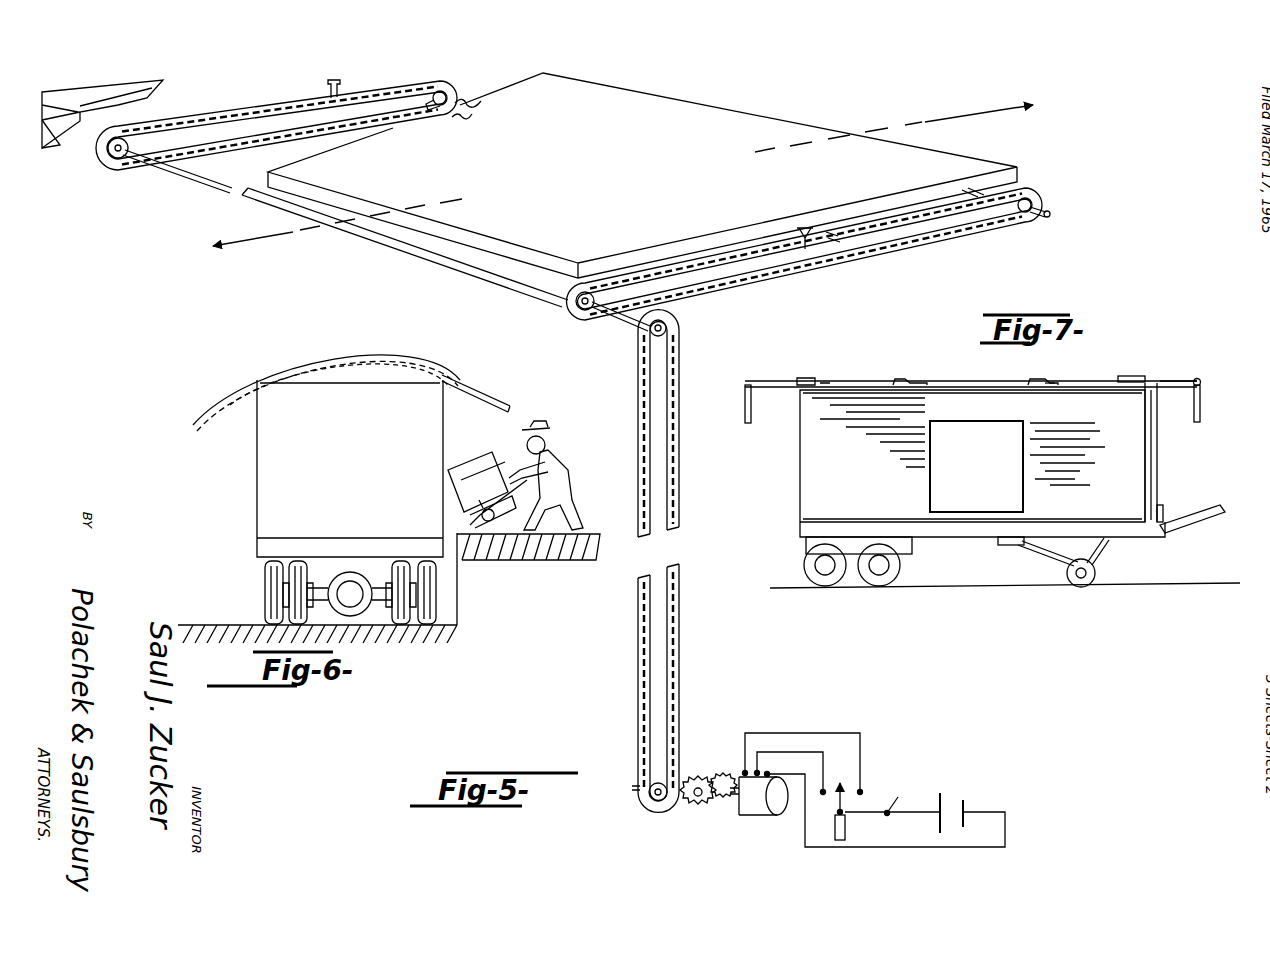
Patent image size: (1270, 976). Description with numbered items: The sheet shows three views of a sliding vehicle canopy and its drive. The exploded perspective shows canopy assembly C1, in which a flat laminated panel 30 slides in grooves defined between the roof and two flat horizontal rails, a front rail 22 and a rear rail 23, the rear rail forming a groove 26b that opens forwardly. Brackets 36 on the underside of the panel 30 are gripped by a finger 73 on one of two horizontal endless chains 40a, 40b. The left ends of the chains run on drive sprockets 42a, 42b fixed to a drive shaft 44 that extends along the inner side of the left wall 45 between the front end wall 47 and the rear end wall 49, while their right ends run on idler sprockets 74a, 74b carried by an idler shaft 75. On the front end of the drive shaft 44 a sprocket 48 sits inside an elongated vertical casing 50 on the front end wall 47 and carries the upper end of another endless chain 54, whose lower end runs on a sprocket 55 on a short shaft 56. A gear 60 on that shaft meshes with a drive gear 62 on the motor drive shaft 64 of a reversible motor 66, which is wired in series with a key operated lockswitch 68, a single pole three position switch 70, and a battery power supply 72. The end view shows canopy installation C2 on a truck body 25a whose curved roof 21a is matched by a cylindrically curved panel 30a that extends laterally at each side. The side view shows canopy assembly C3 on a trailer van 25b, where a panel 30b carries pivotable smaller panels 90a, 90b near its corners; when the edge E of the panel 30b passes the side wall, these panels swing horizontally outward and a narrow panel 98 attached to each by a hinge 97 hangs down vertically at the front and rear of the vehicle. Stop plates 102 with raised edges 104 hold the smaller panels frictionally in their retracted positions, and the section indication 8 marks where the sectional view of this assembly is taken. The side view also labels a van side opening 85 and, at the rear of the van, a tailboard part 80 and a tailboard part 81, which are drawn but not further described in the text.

In FIG. 6, the curved roof 21a is at (355, 358).
In FIG. 7, the front rail 22 is at (1140, 376).
In FIG. 5, the rear rail 23 is at (77, 92).
In FIG. 7, the rear rail 23 is at (803, 378).
In FIG. 6, the truck body 25a is at (256, 478).
In FIG. 7, the trailer van 25b is at (825, 485).
In FIG. 5, the groove 26b is at (43, 108).
In FIG. 5, the flat laminated panel 30 is at (518, 100).
In FIG. 6, the curved panel 30a is at (478, 404).
In FIG. 7, the panel 30b is at (990, 383).
In FIG. 5, the brackets 36 is at (834, 238).
In FIG. 5, the endless chain 40a is at (590, 316).
In FIG. 5, the endless chain 40b is at (265, 108).
In FIG. 5, the drive sprocket 42a is at (565, 305).
In FIG. 5, the drive sprocket 42b is at (112, 163).
In FIG. 5, the drive shaft 44 is at (445, 260).
In FIG. 5, the left wall 45 is at (62, 140).
In FIG. 7, the left wall 45 is at (825, 500).
In FIG. 7, the front end wall 47 is at (1153, 435).
In FIG. 5, the sprocket 48 is at (650, 336).
In FIG. 6, the rear end wall 49 is at (297, 493).
In FIG. 7, the rear end wall 49 is at (800, 492).
In FIG. 7, the casing 50 is at (1152, 462).
In FIG. 5, the endless chain 54 is at (640, 412).
In FIG. 5, the sprocket 55 is at (654, 806).
In FIG. 5, the short shaft 56 is at (677, 808).
In FIG. 5, the gear 60 is at (710, 773).
In FIG. 5, the drive gear 62 is at (735, 761).
In FIG. 5, the motor drive shaft 64 is at (728, 798).
In FIG. 5, the motor 66 is at (779, 812).
In FIG. 5, the key operated lockswitch 68 is at (893, 800).
In FIG. 5, the three position switch 70 is at (833, 820).
In FIG. 5, the battery power supply 72 is at (998, 781).
In FIG. 5, the finger 73 is at (796, 243).
In FIG. 5, the idler sprocket 74a is at (1022, 222).
In FIG. 5, the idler sprocket 74b is at (428, 92).
In FIG. 5, the idler shaft 75 is at (1042, 211).
In FIG. 7, the ramp hinge 80 is at (1162, 504).
In FIG. 5, the ramp / resistor 81 is at (846, 832).
In FIG. 7, the ramp / resistor 81 is at (1192, 507).
In FIG. 7, the door opening 85 is at (945, 495).
In FIG. 7, the smaller panel 90a is at (1170, 380).
In FIG. 7, the smaller panel 90b is at (760, 380).
In FIG. 7, the hinge 97 is at (1201, 384).
In FIG. 7, the narrow panel 98 is at (741, 413).
In FIG. 7, the stop plates 102 is at (1035, 378).
In FIG. 7, the raised edges 104 is at (1052, 380).
In FIG. 7, the section line 8 is at (736, 384).
In FIG. 5, the canopy assembly C1 is at (740, 108).
In FIG. 6, the canopy installation C2 is at (500, 365).
In FIG. 7, the canopy assembly C3 is at (851, 340).
In FIG. 7, the edge E is at (1003, 383).